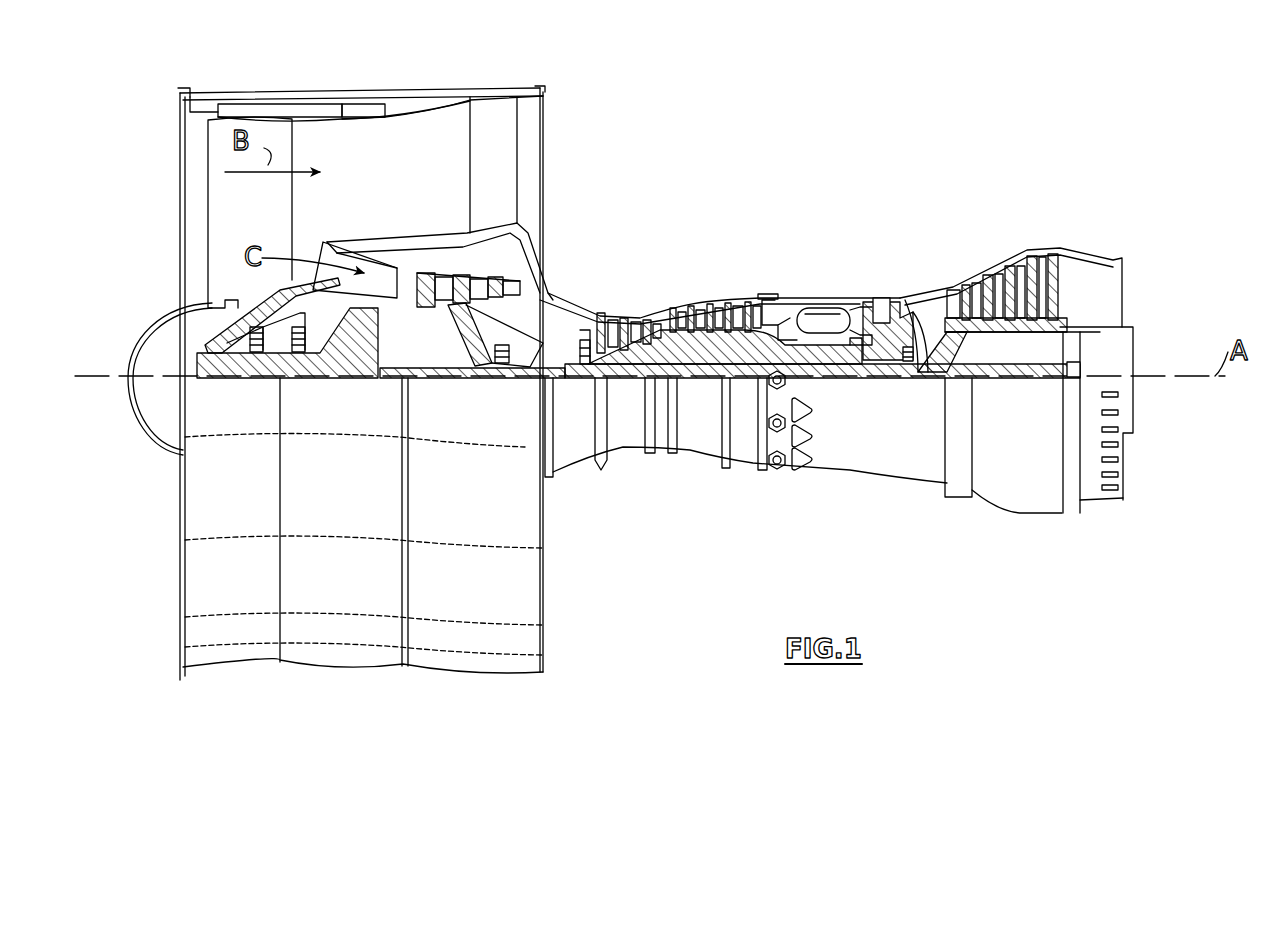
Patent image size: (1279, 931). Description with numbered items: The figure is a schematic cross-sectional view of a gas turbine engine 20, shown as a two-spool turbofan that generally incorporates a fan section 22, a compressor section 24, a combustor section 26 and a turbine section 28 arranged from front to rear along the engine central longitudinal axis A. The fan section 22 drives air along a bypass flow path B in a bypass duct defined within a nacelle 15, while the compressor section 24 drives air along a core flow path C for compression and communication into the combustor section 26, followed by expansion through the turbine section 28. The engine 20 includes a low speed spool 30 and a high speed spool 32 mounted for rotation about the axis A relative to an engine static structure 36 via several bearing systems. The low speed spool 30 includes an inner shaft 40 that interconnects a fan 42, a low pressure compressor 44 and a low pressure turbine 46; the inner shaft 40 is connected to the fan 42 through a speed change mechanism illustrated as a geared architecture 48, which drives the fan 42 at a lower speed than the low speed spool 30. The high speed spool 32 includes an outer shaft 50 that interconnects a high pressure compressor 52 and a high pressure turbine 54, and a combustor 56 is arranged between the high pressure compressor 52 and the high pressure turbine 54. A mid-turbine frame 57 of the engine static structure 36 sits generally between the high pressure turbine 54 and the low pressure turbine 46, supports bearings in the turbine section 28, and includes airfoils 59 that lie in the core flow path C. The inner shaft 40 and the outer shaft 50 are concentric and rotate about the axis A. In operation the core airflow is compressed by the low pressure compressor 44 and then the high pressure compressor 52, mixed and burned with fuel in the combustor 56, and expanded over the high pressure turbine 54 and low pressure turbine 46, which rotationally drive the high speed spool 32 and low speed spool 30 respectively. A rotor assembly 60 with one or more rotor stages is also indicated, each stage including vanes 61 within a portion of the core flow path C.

The nacelle 15 is at (362, 97).
The gas turbine engine 20 is at (824, 144).
The fan section 22 is at (292, 84).
The compressor section 24 is at (596, 280).
The combustor section 26 is at (820, 270).
The turbine section 28 is at (965, 236).
The low speed spool 30 is at (702, 390).
The high speed spool 32 is at (745, 340).
The engine static structure 36 is at (742, 472).
The inner shaft 40 is at (560, 380).
The fan 42 is at (267, 222).
The low pressure compressor 44 is at (480, 278).
The low pressure turbine 46 is at (1010, 268).
The geared architecture 48 is at (370, 356).
The outer shaft 50 is at (827, 365).
The high pressure compressor 52 is at (676, 340).
The high pressure turbine 54 is at (883, 300).
The combustor 56 is at (820, 316).
The mid-turbine frame 57 is at (932, 294).
The airfoils 59 is at (925, 312).
The rotor assembly 60 is at (680, 275).
The vanes 61 is at (700, 305).